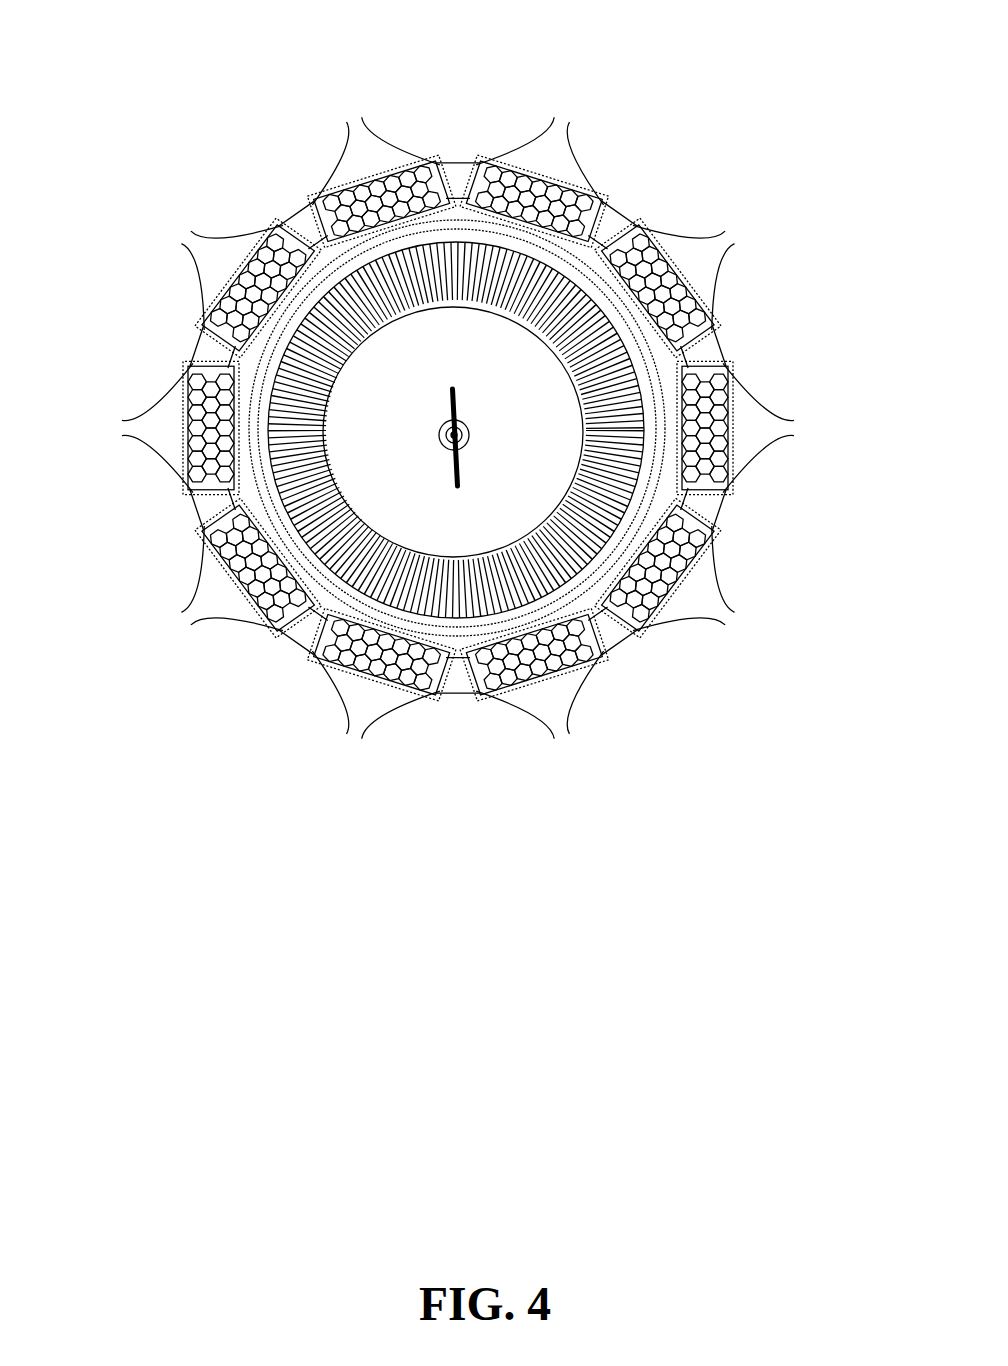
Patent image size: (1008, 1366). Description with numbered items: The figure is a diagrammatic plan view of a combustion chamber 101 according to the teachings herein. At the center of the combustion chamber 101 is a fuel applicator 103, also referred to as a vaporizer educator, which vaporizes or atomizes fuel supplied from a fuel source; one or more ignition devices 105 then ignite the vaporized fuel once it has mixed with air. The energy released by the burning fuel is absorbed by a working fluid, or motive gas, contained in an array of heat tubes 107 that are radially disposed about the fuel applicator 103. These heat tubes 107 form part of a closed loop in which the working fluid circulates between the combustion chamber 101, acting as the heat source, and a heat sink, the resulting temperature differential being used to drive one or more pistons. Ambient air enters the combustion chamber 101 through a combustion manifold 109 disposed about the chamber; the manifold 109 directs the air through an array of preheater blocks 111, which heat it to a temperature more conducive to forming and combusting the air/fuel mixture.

The combustion chamber 101 is at (143, 74).
The fuel applicator 103 is at (468, 424).
The ignition device 105 is at (447, 468).
The array of heat tubes 107 is at (272, 366).
The combustion manifold 109 is at (200, 572).
The array of preheater blocks 111 is at (600, 650).